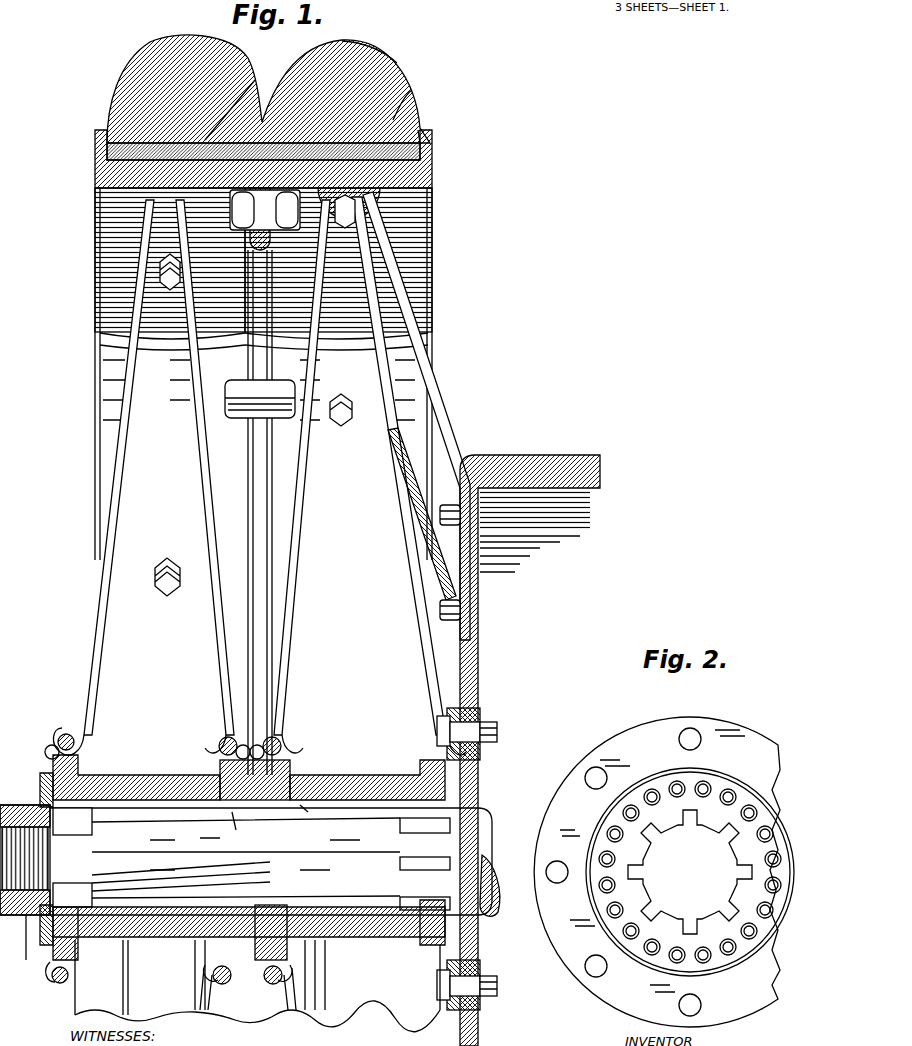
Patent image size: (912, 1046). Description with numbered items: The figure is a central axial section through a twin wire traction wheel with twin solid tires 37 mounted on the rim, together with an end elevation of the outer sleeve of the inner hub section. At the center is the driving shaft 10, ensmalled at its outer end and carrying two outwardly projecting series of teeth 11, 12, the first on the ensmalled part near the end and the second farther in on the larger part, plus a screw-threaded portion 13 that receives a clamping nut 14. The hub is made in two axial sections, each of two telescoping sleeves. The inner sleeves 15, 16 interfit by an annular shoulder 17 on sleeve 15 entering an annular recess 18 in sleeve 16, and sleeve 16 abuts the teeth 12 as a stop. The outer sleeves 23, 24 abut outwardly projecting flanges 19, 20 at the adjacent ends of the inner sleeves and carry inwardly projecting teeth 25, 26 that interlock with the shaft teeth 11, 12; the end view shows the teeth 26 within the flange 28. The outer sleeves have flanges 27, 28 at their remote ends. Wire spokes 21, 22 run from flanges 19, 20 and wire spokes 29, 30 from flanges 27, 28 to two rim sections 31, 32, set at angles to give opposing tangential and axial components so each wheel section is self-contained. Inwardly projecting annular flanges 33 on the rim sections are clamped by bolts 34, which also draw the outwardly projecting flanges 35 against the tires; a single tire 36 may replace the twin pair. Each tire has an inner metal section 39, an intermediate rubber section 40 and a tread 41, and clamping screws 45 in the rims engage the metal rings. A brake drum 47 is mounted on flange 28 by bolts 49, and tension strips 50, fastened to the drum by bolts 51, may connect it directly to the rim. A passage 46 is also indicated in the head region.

In FIG. 1, the central driving shaft 10 is at (483, 813).
In FIG. 1, the teeth 11 is at (32, 805).
In FIG. 1, the teeth 12 is at (450, 856).
In FIG. 1, the screw-threaded portion 13 is at (13, 937).
In FIG. 1, the clamping nut 14 is at (48, 962).
In FIG. 1, the inner sleeve 15 is at (236, 815).
In FIG. 1, the inner sleeve 16 is at (305, 810).
In FIG. 1, the annular shoulder 17 is at (253, 900).
In FIG. 1, the annular recess 18 is at (287, 913).
In FIG. 1, the flange 19 is at (225, 730).
In FIG. 1, the flange 20 is at (277, 730).
In FIG. 1, the wire spokes 21 is at (208, 623).
In FIG. 1, the wire spokes 22 is at (307, 681).
In FIG. 1, the outer sleeve 23 is at (148, 777).
In FIG. 1, the outer sleeve 24 is at (330, 780).
In FIG. 1, the teeth 25 is at (43, 783).
In FIG. 1, the teeth 26 is at (422, 920).
In FIG. 2, the teeth 26 is at (666, 822).
In FIG. 1, the flange 27 is at (63, 732).
In FIG. 1, the flange 28 is at (460, 708).
In FIG. 2, the flange 28 is at (645, 727).
In FIG. 1, the wire spokes 29 is at (97, 648).
In FIG. 1, the wire spokes 30 is at (423, 672).
In FIG. 1, the rim section 31 is at (113, 190).
In FIG. 1, the rim section 32 is at (430, 202).
In FIG. 1, the annular flanges 33 is at (260, 568).
In FIG. 1, the clamping bolts 34 is at (240, 427).
In FIG. 1, the flanges 35 is at (430, 147).
In FIG. 1, the tire 36 is at (265, 210).
In FIG. 1, the twin tires 37 is at (162, 52).
In FIG. 1, the inner metal section 39 is at (418, 130).
In FIG. 1, the intermediate rubber section 40 is at (393, 120).
In FIG. 1, the tire tread 41 is at (397, 63).
In FIG. 1, the clamping screws 45 is at (432, 237).
In FIG. 1, the passage 46 is at (241, 102).
In FIG. 1, the brake drum 47 is at (567, 463).
In FIG. 1, the bolts 49 is at (497, 722).
In FIG. 1, the tension strips 50 is at (443, 424).
In FIG. 1, the bolts 51 is at (470, 505).